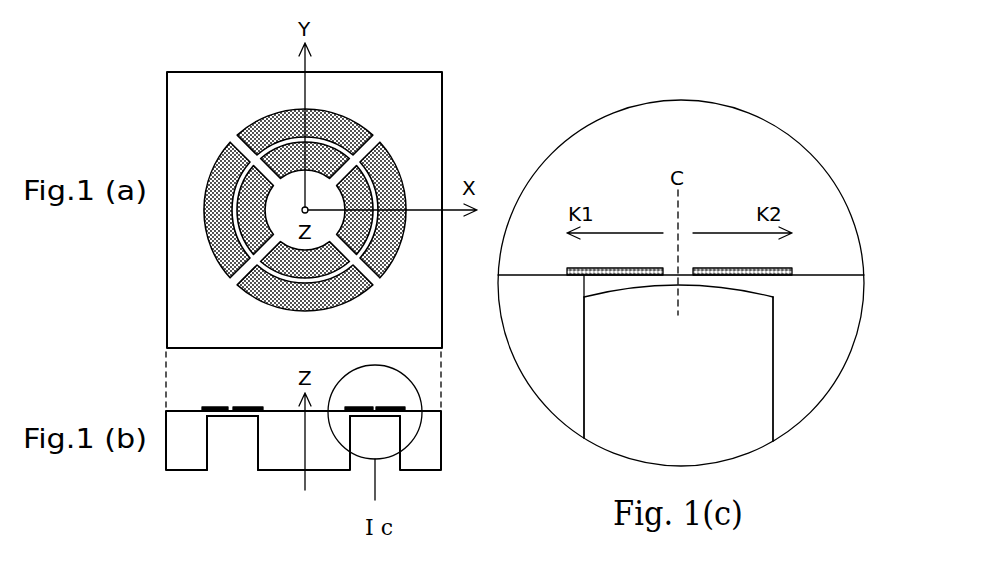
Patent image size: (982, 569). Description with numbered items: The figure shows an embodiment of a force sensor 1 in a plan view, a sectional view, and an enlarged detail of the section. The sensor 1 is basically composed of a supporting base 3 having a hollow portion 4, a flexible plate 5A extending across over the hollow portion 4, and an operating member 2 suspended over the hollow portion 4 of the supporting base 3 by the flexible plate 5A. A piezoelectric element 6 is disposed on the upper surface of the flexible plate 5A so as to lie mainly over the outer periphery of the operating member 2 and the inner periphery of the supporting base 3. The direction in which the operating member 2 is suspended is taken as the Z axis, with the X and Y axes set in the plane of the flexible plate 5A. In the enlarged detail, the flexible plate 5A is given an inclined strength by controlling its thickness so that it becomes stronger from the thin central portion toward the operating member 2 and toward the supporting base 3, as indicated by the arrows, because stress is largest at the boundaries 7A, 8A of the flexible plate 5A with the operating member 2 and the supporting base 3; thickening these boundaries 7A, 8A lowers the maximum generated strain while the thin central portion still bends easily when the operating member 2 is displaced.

In FIG. 1A, the sensor 1 is at (418, 62).
In FIG. 1B, the operating member 2 is at (285, 452).
In FIG. 1C, the operating member 2 is at (553, 363).
In FIG. 1B, the supporting base 3 is at (193, 454).
In FIG. 1C, the supporting base 3 is at (826, 361).
In FIG. 1B, the hollow portion 4 is at (233, 448).
In FIG. 1B, the flexible plate 5A is at (223, 417).
In FIG. 1C, the flexible plate 5A is at (638, 291).
In FIG. 1A, the piezoelectric element 6 is at (255, 125).
In FIG. 1B, the piezoelectric element 6 is at (256, 409).
In FIG. 1C, the piezoelectric element 6 is at (788, 268).
In FIG. 1C, the boundary 7A is at (590, 300).
In FIG. 1C, the boundary 8A is at (768, 300).